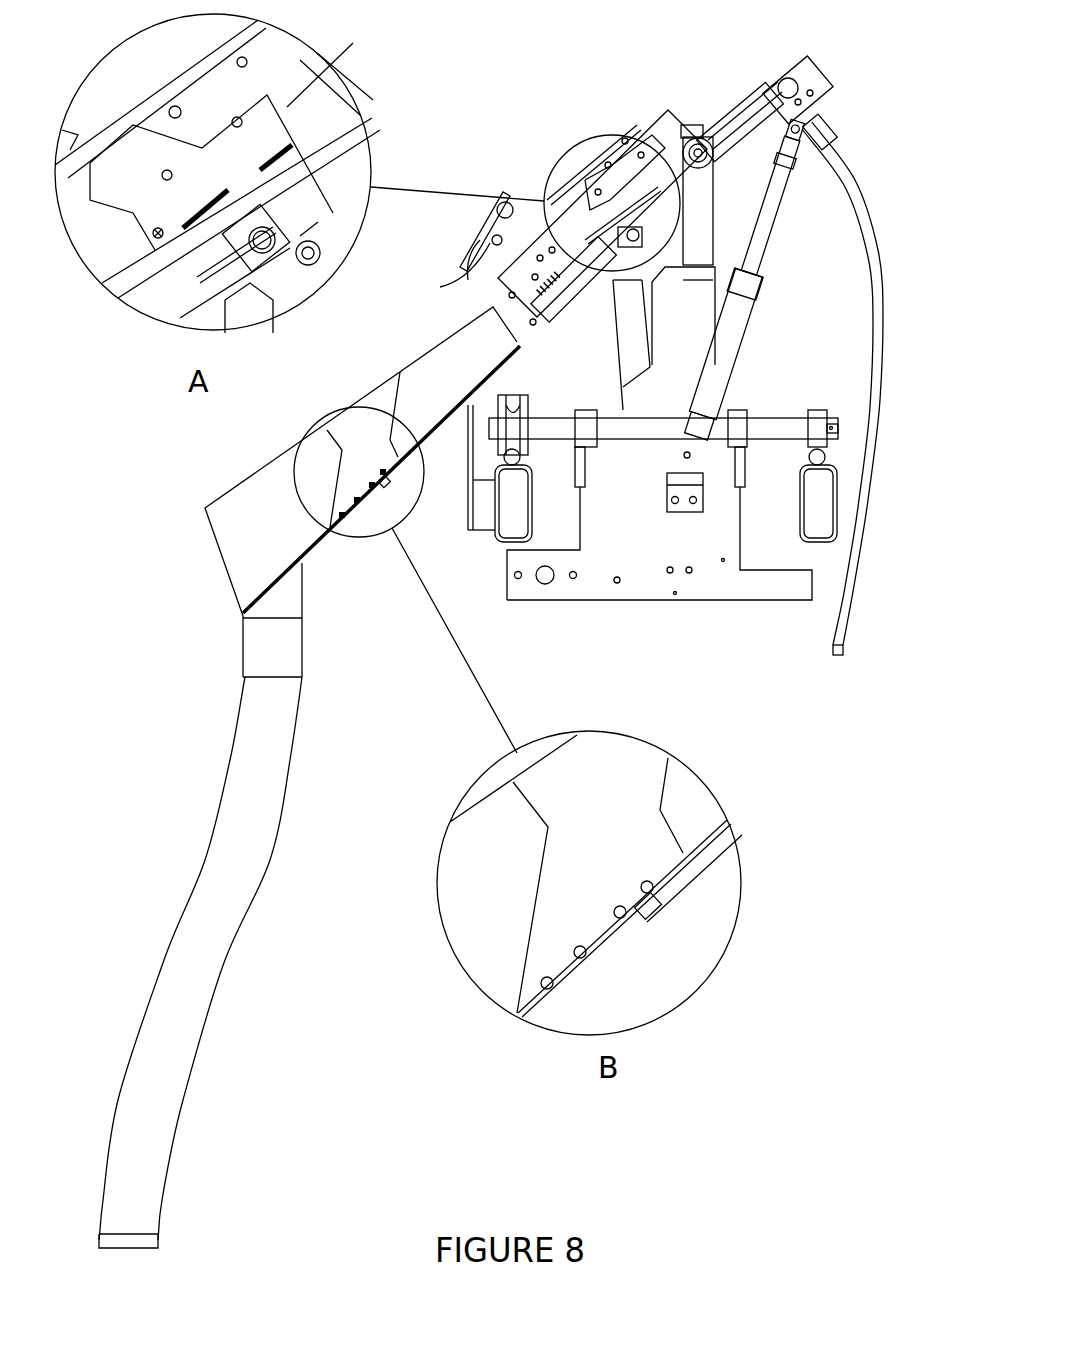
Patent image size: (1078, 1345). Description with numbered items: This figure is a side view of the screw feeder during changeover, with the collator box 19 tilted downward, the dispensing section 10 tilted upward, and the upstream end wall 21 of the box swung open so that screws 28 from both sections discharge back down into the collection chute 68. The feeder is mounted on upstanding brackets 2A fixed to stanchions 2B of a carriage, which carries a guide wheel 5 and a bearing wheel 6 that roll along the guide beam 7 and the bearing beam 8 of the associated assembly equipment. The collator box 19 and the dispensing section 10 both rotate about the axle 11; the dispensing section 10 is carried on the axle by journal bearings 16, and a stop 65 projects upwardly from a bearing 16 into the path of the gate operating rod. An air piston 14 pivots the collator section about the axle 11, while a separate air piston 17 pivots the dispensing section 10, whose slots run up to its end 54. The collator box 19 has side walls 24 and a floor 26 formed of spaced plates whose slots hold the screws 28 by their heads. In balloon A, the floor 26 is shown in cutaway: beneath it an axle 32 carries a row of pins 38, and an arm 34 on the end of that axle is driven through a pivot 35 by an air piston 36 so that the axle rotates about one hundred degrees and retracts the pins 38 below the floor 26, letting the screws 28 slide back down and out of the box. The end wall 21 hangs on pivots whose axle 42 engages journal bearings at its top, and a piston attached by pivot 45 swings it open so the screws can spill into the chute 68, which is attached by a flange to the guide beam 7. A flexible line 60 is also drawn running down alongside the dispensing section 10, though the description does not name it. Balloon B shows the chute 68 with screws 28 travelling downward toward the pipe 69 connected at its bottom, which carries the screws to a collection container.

The upstanding brackets 2A is at (683, 316).
The stanchions 2B is at (653, 502).
The guide wheel 5 is at (515, 398).
The bearing wheel 6 is at (812, 410).
The guide beam 7 is at (533, 510).
The bearing beam 8 is at (800, 515).
The dispensing section 10 is at (763, 100).
The axle 11 is at (698, 168).
The air piston 14 is at (625, 350).
The journal bearings 16 is at (726, 150).
The air piston 17 is at (725, 345).
The collator box 19 is at (652, 125).
The end wall 21 is at (478, 240).
The side walls 24 is at (142, 190).
The floor 26 is at (183, 228).
The screws 28 is at (585, 935).
The axle 32 is at (266, 232).
The arm 34 is at (300, 236).
The pivot 35 is at (313, 258).
The air piston 36 is at (590, 300).
The pins 38 is at (215, 282).
The axle 42 is at (508, 195).
The pivot 45 is at (470, 278).
The end 54 is at (822, 80).
The hose 60 is at (885, 310).
The stop 65 is at (690, 125).
The chute 68 is at (444, 660).
The pipe 69 is at (200, 905).